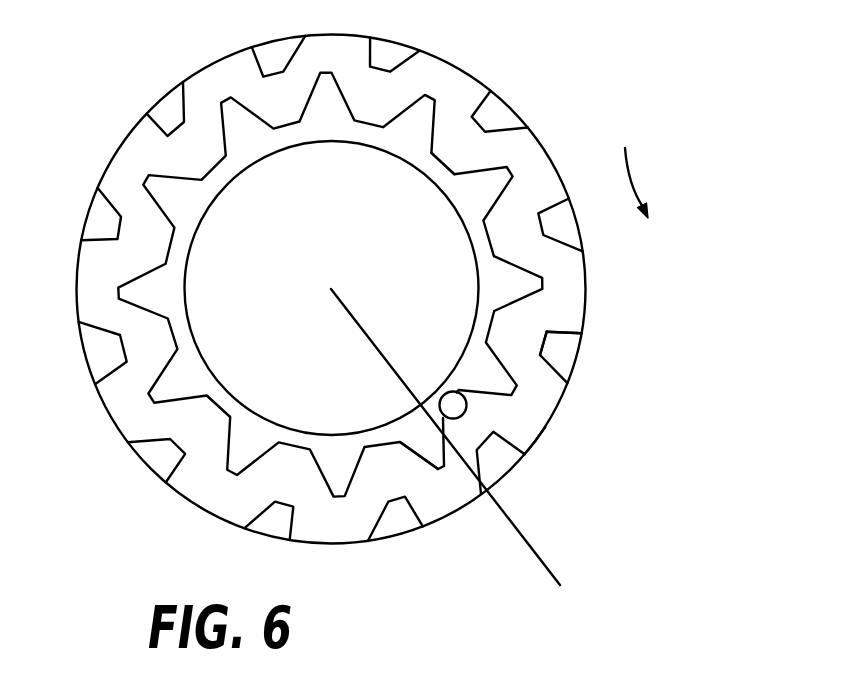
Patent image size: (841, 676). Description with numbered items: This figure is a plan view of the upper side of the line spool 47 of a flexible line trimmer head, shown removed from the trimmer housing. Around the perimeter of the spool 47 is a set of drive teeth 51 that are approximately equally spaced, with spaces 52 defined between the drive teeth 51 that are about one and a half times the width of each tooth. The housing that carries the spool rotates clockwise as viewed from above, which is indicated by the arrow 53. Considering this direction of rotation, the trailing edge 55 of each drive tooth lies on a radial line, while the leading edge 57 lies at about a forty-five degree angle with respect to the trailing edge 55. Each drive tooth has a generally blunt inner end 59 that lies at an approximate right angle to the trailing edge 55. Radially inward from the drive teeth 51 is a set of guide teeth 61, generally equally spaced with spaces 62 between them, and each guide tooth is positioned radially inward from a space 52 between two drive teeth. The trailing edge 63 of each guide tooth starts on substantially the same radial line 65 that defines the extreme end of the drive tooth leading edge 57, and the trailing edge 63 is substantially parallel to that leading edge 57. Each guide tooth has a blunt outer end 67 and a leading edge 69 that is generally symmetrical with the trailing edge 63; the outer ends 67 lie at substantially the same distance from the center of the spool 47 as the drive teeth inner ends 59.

The spool 47 is at (108, 418).
The drive teeth 51 is at (568, 354).
The spaces 52 is at (535, 433).
The arrow 53 is at (636, 165).
The trailing edge 55 is at (580, 332).
The leading edge 57 is at (535, 430).
The inner end 59 is at (547, 340).
The guide teeth 61 is at (417, 127).
The spaces 62 is at (450, 163).
The trailing edge 63 is at (458, 392).
The radial line 65 is at (537, 545).
The outer ends 67 is at (444, 468).
The leading edges 69 is at (417, 455).